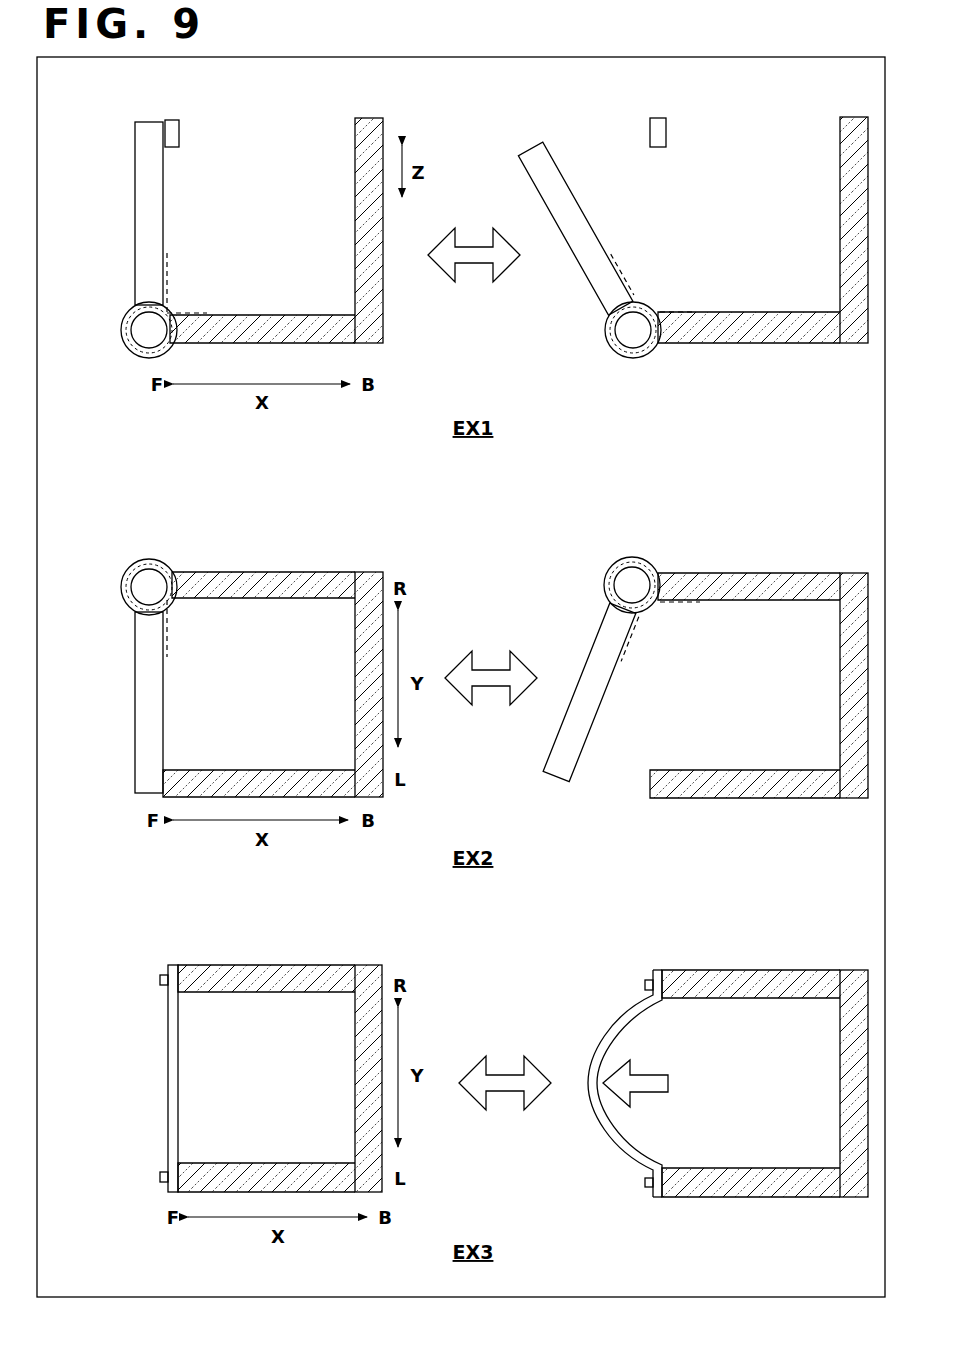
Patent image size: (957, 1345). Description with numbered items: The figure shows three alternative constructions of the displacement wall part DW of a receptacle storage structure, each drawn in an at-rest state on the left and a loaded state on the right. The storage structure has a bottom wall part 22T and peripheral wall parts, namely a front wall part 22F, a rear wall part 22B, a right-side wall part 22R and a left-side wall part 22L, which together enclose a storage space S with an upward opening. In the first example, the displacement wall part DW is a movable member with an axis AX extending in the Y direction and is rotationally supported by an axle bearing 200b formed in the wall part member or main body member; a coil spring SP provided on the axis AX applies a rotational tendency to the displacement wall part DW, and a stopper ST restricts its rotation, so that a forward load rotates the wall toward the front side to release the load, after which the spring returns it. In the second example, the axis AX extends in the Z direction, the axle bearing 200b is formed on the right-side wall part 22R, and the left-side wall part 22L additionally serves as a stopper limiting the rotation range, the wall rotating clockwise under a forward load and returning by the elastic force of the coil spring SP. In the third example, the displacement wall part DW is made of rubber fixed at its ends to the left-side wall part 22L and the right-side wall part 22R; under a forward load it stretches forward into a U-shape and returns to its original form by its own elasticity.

The front wall part 22F is at (118, 146).
The rear wall part 22B is at (348, 170).
The bottom wall part 22T is at (302, 314).
The right-side wall part 22R is at (312, 571).
The left-side wall part 22L is at (305, 769).
The displacement wall part DW is at (134, 205).
The stopper ST is at (180, 132).
The coil spring SP is at (172, 256).
The storage space S is at (506, 643).
The axis AX is at (140, 330).
The axle bearing 200b is at (138, 358).